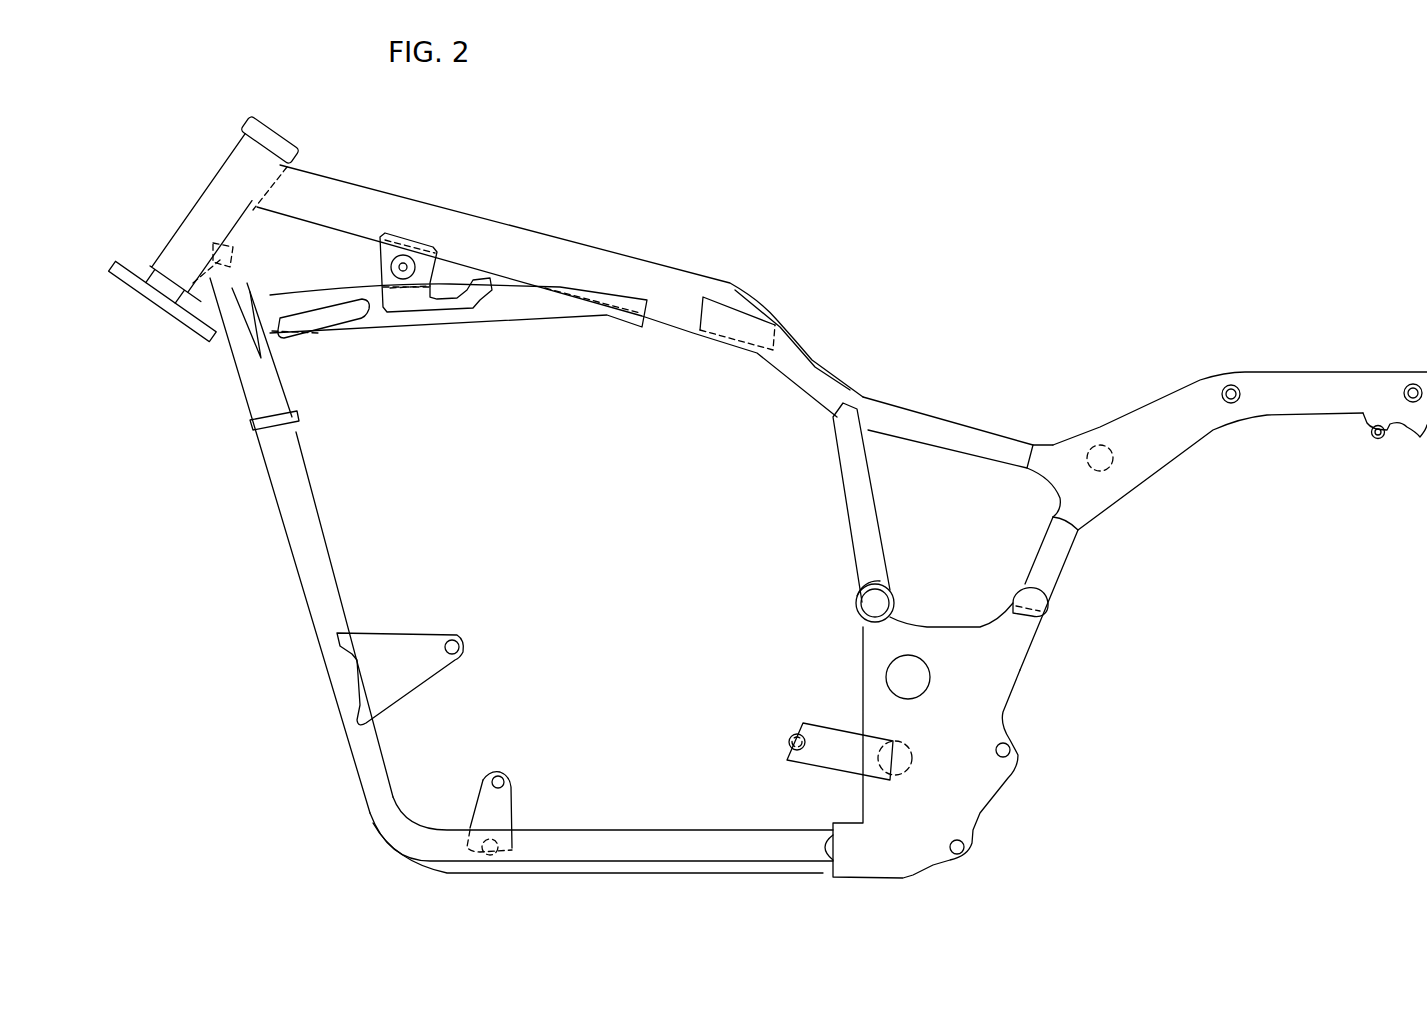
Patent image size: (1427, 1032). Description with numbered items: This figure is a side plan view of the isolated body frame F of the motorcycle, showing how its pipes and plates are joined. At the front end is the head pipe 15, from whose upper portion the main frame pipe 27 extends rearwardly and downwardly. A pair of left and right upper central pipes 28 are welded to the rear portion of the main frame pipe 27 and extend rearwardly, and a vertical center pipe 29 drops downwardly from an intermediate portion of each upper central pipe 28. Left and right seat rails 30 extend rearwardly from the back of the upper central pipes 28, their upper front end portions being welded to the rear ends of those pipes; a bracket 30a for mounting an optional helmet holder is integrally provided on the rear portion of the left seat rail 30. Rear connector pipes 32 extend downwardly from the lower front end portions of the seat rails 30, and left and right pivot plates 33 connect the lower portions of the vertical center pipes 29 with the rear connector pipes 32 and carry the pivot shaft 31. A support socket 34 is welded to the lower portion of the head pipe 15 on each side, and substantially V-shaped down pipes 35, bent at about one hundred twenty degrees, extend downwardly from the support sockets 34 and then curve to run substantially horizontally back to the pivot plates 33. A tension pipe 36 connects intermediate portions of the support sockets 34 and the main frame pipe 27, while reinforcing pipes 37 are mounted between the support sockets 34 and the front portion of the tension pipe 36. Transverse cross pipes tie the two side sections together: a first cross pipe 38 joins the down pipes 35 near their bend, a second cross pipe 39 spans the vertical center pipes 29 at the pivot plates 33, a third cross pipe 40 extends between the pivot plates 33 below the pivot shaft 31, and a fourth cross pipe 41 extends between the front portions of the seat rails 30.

The body frame F is at (543, 232).
The head pipe 15 is at (237, 178).
The main frame pipe 27 is at (437, 213).
The upper central pipe 28 is at (903, 417).
The vertical center pipe 29 is at (850, 464).
The seat rail 30 is at (1157, 412).
The bracket 30a is at (1408, 430).
The pivot shaft 31 is at (917, 673).
The rear connector pipe 32 is at (1053, 565).
The pivot plate 33 is at (950, 640).
The support socket 34 is at (243, 348).
The down pipe 35 is at (335, 672).
The tension pipe 36 is at (482, 318).
The reinforcing pipe 37 is at (350, 319).
The first transversely oriented cross pipe 38 is at (507, 827).
The second transversely oriented cross pipe 39 is at (860, 627).
The third transversely oriented cross pipe 40 is at (911, 772).
The fourth transversely oriented cross pipe 41 is at (1113, 462).